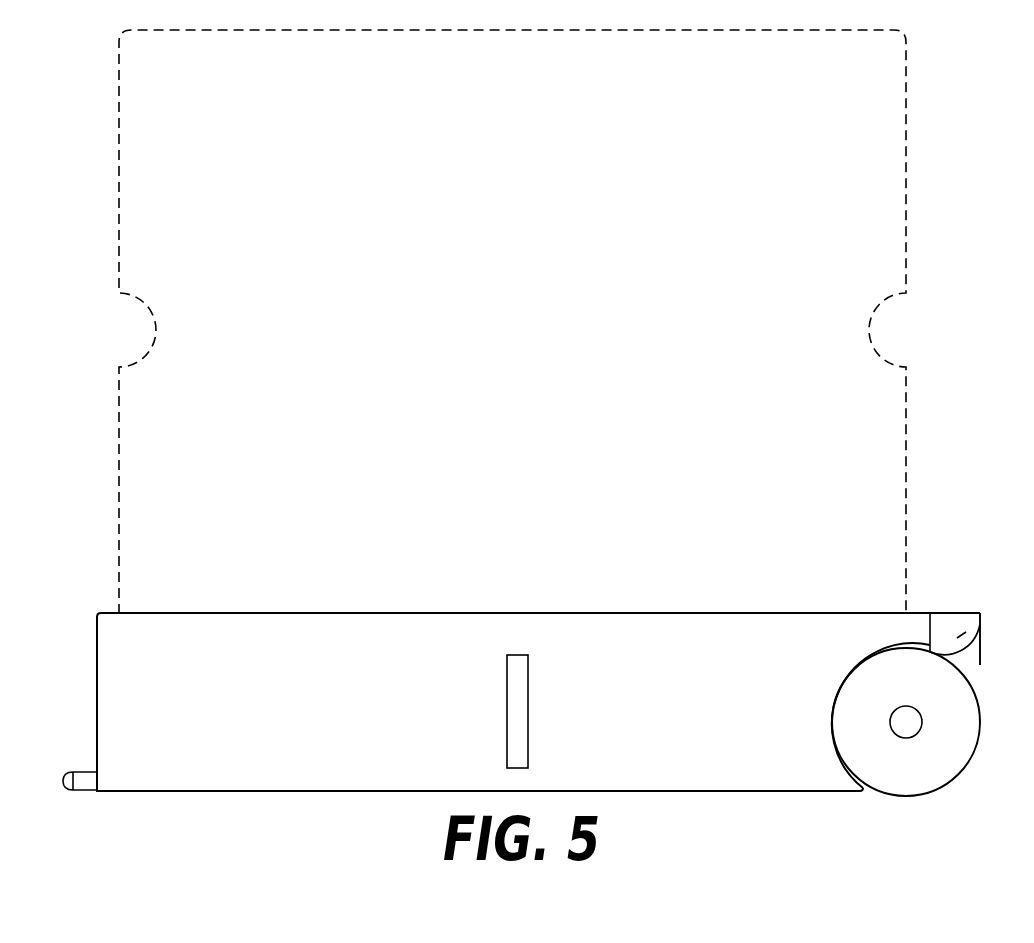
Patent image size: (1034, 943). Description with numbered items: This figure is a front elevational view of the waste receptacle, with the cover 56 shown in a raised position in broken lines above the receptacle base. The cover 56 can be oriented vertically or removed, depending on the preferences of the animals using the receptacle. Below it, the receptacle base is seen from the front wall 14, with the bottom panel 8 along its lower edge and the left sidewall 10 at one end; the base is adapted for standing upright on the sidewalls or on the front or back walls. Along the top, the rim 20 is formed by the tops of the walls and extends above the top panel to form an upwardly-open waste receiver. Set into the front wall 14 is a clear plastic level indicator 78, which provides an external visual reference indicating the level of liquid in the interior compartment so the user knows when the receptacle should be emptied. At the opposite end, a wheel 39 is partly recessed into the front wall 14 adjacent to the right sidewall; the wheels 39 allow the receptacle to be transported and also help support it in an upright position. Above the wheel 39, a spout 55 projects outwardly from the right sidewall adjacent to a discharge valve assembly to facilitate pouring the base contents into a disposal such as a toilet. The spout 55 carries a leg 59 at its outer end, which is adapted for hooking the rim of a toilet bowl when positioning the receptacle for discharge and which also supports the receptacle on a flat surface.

The cover 56 is at (907, 177).
The sidewall 10 is at (97, 735).
The rim 20 is at (452, 613).
The bottom panel 8 is at (212, 792).
The front wall 14 is at (298, 712).
The level indicator 78 is at (528, 688).
The wheels 39 is at (832, 700).
The spout 55 is at (956, 613).
The leg 59 is at (980, 665).